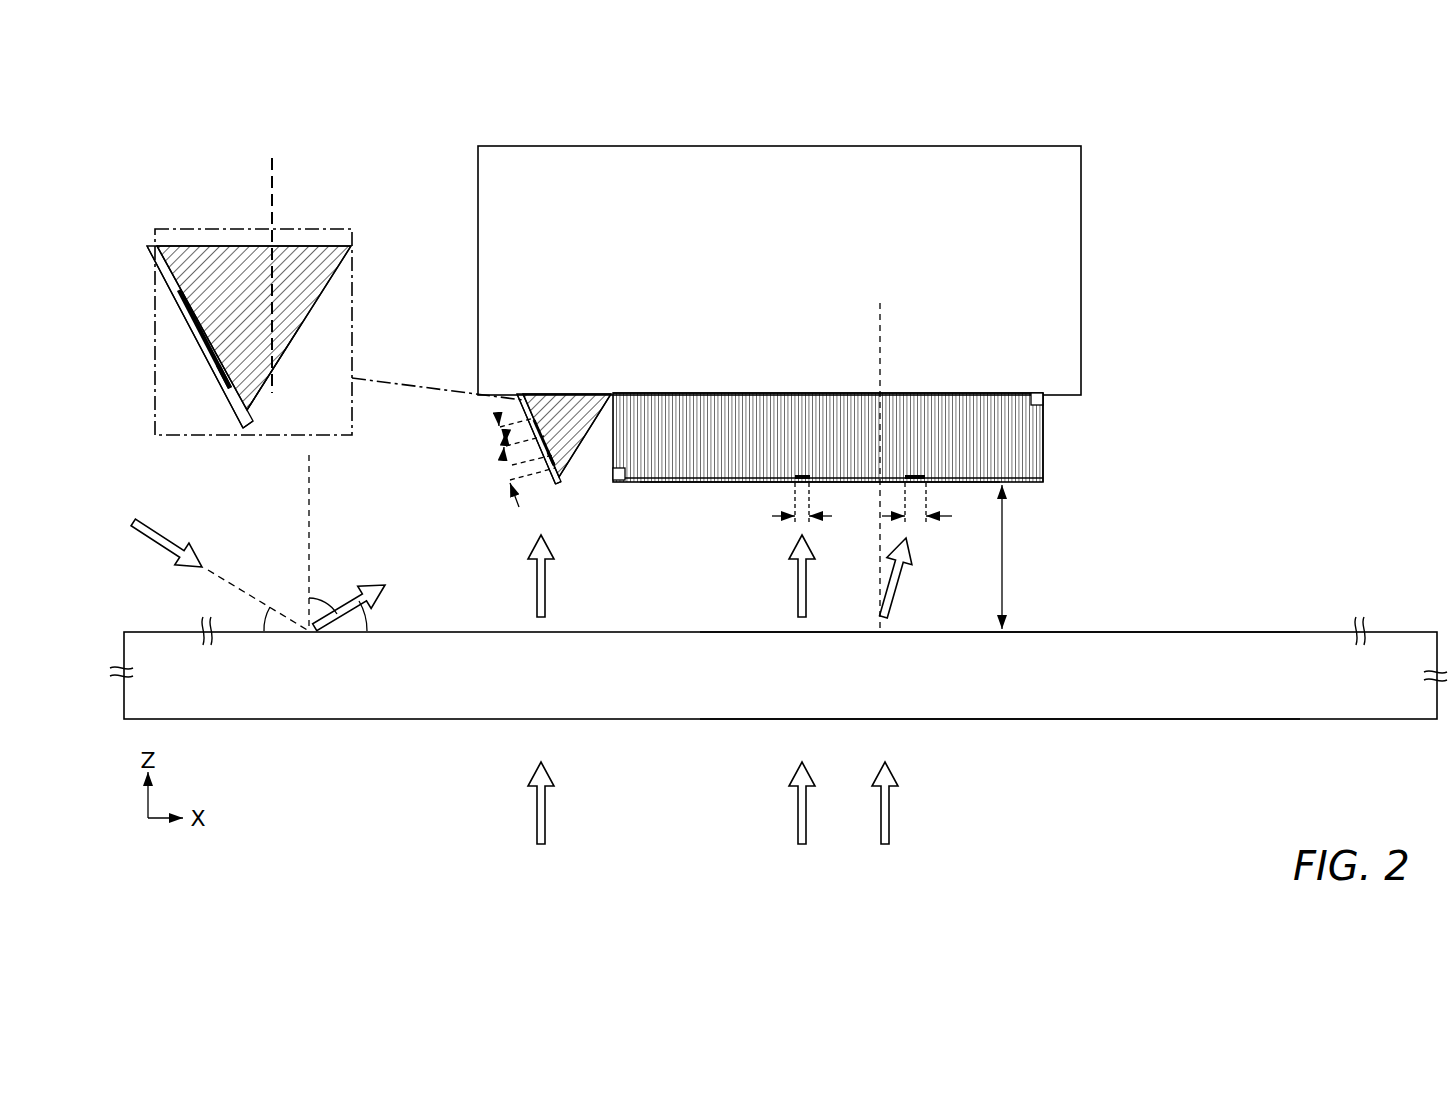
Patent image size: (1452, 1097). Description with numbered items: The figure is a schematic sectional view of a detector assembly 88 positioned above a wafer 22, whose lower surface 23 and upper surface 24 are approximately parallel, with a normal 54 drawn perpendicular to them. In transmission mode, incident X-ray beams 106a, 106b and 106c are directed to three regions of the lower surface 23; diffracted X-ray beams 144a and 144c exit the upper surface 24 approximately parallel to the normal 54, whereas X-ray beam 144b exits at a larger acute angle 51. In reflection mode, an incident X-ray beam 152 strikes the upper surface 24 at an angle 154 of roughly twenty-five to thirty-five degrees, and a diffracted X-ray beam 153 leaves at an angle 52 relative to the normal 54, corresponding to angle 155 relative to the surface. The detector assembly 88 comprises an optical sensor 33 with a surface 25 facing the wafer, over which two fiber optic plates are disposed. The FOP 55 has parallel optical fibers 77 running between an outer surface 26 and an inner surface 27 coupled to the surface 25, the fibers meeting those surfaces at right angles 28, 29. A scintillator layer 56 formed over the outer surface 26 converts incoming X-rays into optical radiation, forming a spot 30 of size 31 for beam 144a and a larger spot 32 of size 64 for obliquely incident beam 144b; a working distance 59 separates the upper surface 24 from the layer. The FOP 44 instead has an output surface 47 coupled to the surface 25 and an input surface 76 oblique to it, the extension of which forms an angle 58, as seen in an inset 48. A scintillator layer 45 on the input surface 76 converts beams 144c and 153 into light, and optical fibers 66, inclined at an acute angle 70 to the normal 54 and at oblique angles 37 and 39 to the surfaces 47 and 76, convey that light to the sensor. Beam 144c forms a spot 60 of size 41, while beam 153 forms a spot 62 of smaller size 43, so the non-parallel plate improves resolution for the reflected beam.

The wafer 22 is at (766, 688).
The lower surface of wafer 23 is at (1163, 720).
The upper surface of wafer 24 is at (1092, 630).
The surface of optical sensor 25 is at (1058, 393).
The outer surface of FOP 55 26 is at (1044, 475).
The inner surface of FOP 55 27 is at (850, 393).
The right angle 28 is at (1032, 399).
The right angle 29 is at (626, 476).
The spot 30 is at (797, 471).
The size of spot 30 31 is at (820, 517).
The spot 32 is at (927, 471).
The optical sensor 33 is at (766, 282).
The oblique angle 37 is at (598, 395).
The oblique angle 39 is at (565, 478).
The size of spot 60 41 is at (510, 493).
The size of spot 62 43 is at (490, 422).
The FOP 44 is at (348, 188).
The scintillator layer 45 is at (193, 343).
The surface of FOP 44 47 is at (176, 260).
The inset 48 is at (155, 400).
The acute angle 51 is at (885, 570).
The angle 52 is at (327, 598).
The normal 54 is at (271, 180).
The FOP 55 is at (1064, 437).
The scintillator layer 56 is at (694, 484).
The angle 58 is at (190, 283).
The working distance 59 is at (1004, 557).
The spot 60 is at (246, 410).
The spot 62 is at (193, 300).
The size of spot 32 64 is at (936, 518).
The optical fibers 66 is at (208, 258).
The acute angle 70 is at (273, 292).
The surface of FOP 44 76 is at (242, 425).
The optical fibers 77 is at (932, 382).
The detector assembly 88 is at (1200, 190).
The incident X-ray beam 106a is at (802, 805).
The incident X-ray beam 106b is at (885, 805).
The incident X-ray beam 106c is at (541, 805).
The X-ray beam 144a is at (798, 578).
The X-ray beam 144b is at (893, 600).
The X-ray beam 144c is at (541, 600).
The incident X-ray beam 152 is at (163, 530).
The X-ray beam 153 is at (348, 587).
The angle 154 is at (260, 620).
The angle 155 is at (363, 620).